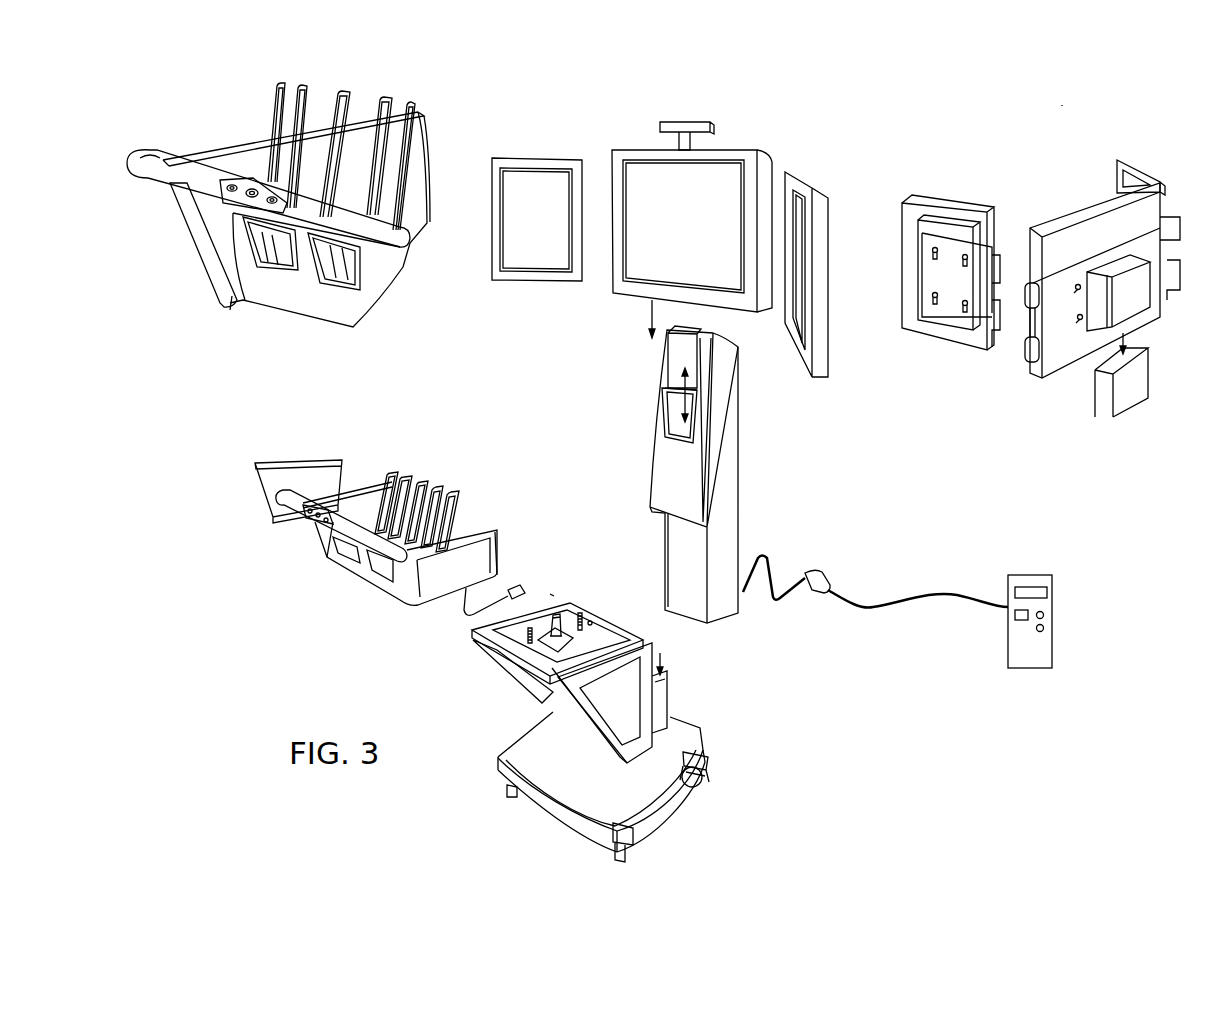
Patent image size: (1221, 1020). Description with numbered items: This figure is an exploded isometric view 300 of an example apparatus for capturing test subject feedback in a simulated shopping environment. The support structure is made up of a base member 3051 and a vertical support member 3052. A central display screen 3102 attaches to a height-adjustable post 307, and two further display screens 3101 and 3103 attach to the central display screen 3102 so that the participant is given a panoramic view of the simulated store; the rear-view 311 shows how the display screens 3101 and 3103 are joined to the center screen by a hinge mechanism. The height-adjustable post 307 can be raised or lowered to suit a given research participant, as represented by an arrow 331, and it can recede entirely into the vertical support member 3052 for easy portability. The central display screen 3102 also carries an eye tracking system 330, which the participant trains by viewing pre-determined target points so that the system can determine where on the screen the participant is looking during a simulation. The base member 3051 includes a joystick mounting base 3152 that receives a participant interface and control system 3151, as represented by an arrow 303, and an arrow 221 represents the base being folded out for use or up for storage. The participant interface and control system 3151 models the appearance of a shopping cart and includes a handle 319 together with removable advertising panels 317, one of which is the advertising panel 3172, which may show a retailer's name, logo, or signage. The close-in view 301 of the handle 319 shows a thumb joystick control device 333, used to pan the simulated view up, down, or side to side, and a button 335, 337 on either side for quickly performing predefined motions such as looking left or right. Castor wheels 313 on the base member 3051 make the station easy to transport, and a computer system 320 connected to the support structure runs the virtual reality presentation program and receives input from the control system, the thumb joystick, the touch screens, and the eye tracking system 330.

The close-in view 301 is at (397, 85).
The thumb joystick control device 333 is at (253, 187).
The button 335 is at (272, 204).
The button 337 is at (230, 192).
The exploded isometric view 300 is at (753, 95).
The display screen 3101 is at (552, 157).
The display screen 3102 is at (743, 148).
The display screen 3103 is at (813, 177).
The eye tracking system 330 is at (713, 126).
The rear-view 311 is at (1062, 105).
The height-adjustable post 307 is at (670, 350).
The vertical support member 3052 is at (740, 467).
The arrow 331 is at (697, 393).
The computer system 320 is at (1052, 606).
The base member 3051 is at (627, 703).
The arrow 221 is at (683, 620).
The castor wheels 313 is at (707, 779).
The joystick mounting base 3152 is at (598, 633).
The arrow 303 is at (553, 590).
The participant interface and control system 3151 is at (397, 506).
The removable advertising panels 317 is at (287, 460).
The advertising panel 3172 is at (503, 547).
The handle 319 is at (318, 537).